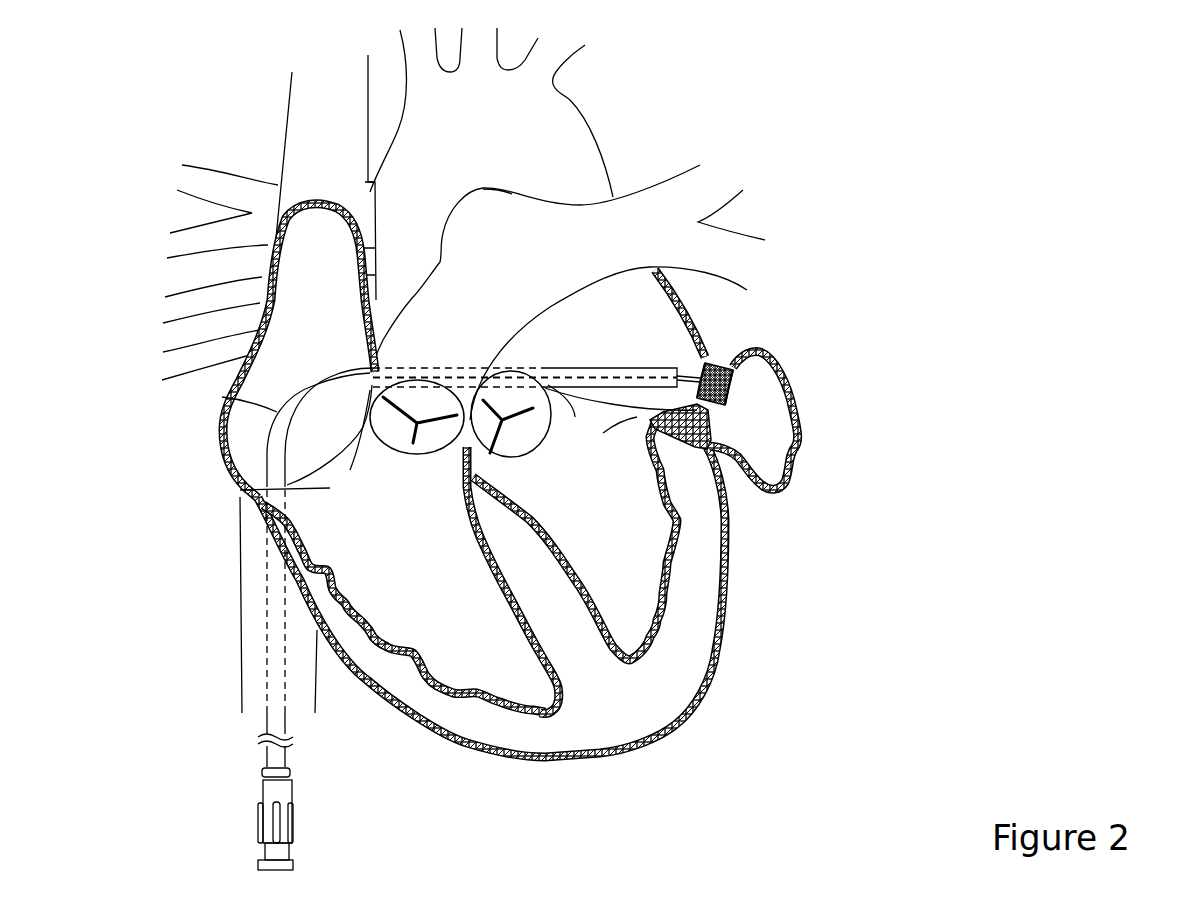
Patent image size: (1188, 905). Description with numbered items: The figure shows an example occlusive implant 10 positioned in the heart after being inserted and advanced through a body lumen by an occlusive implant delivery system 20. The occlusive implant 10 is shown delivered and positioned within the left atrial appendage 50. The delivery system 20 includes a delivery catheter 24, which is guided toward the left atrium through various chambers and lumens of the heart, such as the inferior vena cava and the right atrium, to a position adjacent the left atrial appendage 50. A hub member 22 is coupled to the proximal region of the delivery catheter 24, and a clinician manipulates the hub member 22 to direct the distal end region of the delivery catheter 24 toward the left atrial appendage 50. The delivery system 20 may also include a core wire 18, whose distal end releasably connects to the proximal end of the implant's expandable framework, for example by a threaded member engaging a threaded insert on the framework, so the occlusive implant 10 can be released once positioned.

The occlusive implant 10 is at (748, 373).
The core wire 18 is at (691, 362).
The occlusive implant delivery system 20 is at (251, 819).
The hub member 22 is at (283, 790).
The delivery catheter 24 is at (222, 397).
The left atrial appendage 50 is at (813, 400).